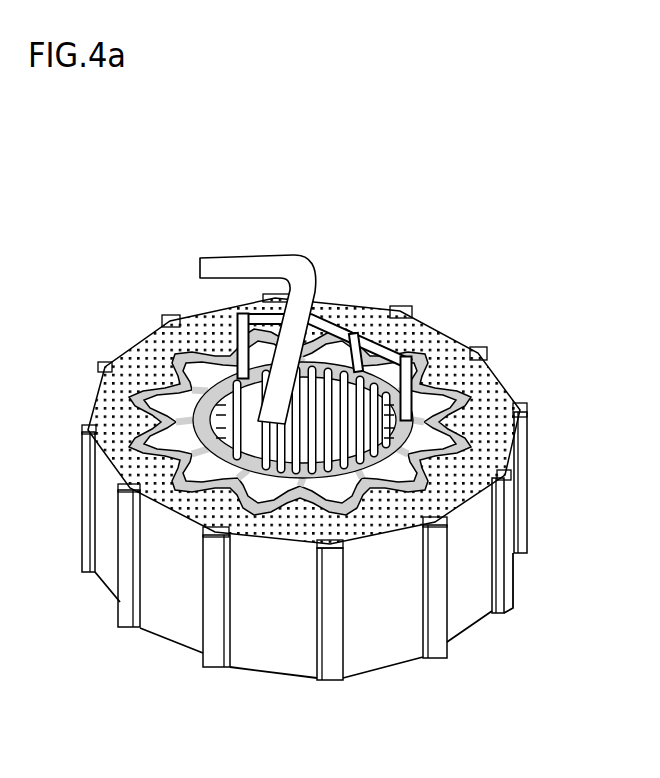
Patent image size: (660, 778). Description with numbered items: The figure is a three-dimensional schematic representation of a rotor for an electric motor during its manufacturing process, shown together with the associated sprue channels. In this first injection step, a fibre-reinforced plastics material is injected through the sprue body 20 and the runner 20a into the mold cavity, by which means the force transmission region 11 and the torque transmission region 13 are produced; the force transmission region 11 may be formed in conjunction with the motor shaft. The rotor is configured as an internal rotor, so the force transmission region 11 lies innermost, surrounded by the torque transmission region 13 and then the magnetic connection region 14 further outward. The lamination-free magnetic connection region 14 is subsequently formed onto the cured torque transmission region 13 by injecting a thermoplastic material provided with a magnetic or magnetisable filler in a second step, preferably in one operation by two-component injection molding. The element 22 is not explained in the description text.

The force transmission region 11 is at (328, 375).
The torque transmission region 13 is at (137, 362).
The magnetic connection region 14 is at (442, 350).
The sprue body 20 is at (248, 263).
The runner 20a is at (440, 383).
The rib 22 is at (480, 480).